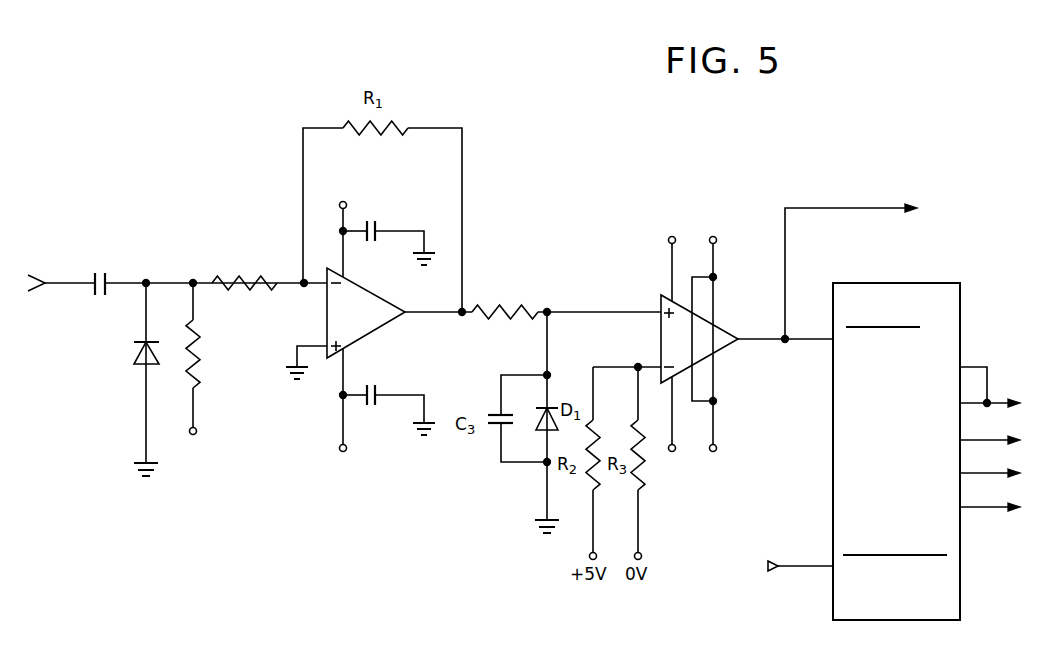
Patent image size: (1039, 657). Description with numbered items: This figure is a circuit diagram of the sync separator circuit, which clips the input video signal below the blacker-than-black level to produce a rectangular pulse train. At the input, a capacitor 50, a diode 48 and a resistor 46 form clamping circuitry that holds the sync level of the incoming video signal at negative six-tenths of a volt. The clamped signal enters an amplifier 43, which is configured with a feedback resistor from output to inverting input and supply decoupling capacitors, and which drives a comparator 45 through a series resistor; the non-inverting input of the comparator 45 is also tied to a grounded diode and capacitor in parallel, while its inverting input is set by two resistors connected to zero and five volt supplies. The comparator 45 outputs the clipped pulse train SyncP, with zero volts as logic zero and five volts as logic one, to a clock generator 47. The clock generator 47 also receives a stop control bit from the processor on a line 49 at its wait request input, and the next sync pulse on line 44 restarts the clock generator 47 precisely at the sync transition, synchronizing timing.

The amplifier 43 is at (352, 347).
The line 44 is at (812, 339).
The comparator 45 is at (720, 350).
The resistor 46 is at (200, 362).
The clock generator 47 is at (912, 283).
The diode 48 is at (146, 410).
The line 49 is at (808, 566).
The capacitor 50 is at (100, 272).